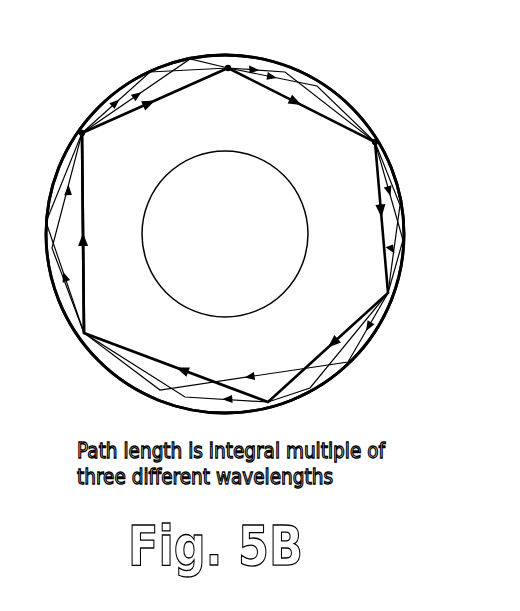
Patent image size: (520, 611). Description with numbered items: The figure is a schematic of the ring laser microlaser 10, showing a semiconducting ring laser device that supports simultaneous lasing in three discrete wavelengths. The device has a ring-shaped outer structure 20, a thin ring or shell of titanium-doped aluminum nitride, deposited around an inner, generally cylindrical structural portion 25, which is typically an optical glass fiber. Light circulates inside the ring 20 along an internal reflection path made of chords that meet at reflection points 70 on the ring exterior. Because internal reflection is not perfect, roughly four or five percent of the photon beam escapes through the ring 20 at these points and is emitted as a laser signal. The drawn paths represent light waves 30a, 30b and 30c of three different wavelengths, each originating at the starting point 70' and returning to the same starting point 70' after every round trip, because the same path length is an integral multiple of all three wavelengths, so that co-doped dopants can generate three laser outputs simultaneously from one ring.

The microlaser 10 is at (383, 357).
The ring-shaped outer structure 20 is at (253, 351).
The inner cylindrical structural portion 25 is at (240, 244).
The first light wave 30a is at (151, 357).
The second light wave 30b is at (84, 282).
The third light wave 30c is at (45, 223).
The reflection points 70 is at (314, 84).
The starting point 70' is at (66, 106).